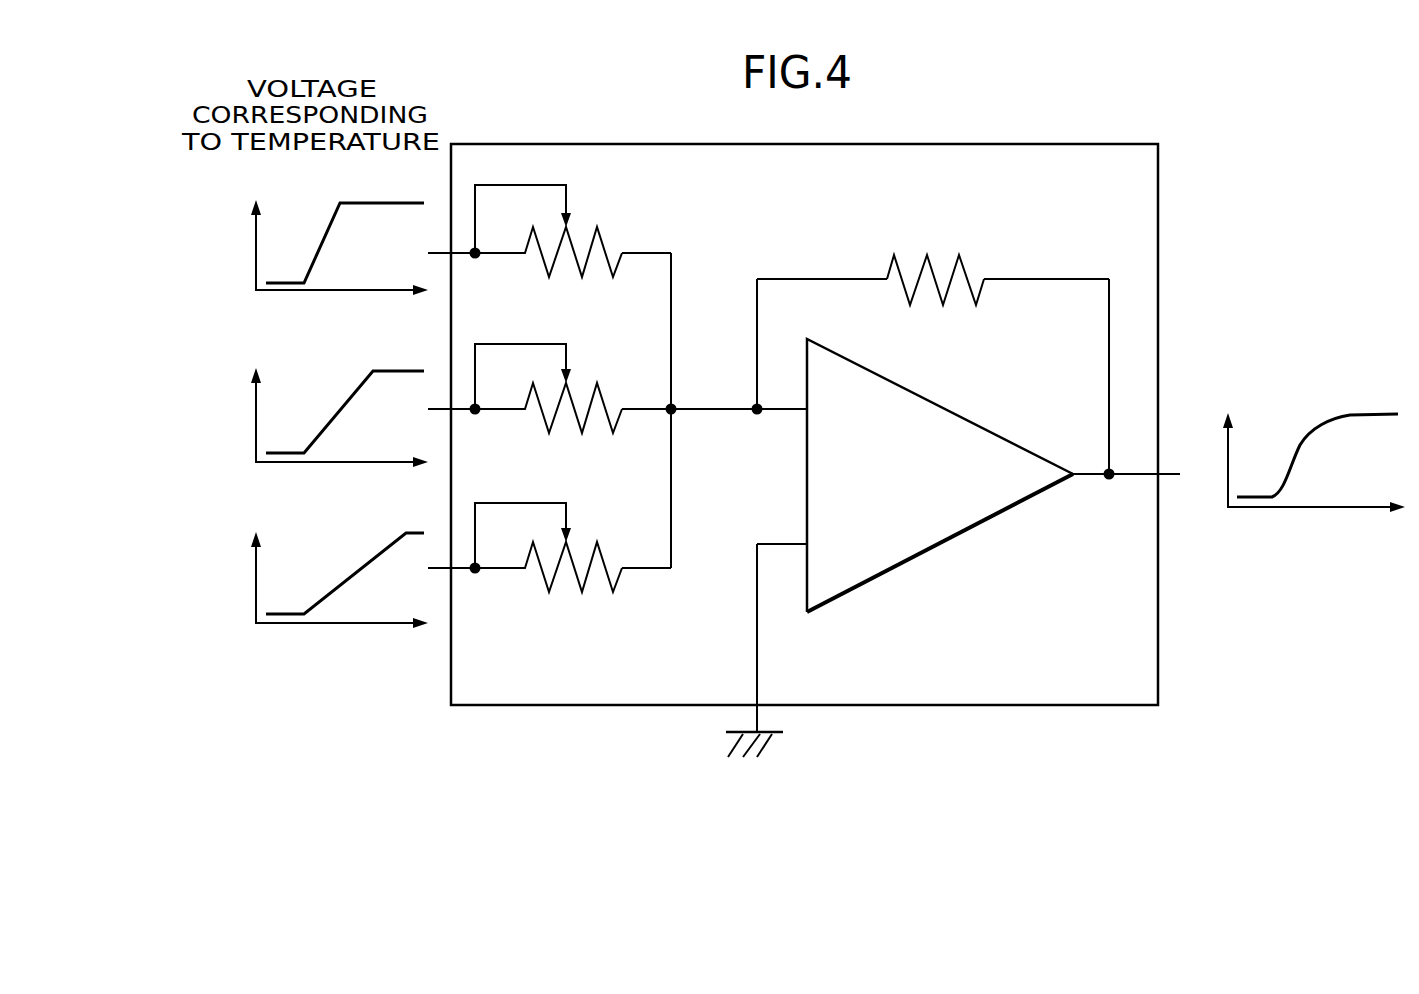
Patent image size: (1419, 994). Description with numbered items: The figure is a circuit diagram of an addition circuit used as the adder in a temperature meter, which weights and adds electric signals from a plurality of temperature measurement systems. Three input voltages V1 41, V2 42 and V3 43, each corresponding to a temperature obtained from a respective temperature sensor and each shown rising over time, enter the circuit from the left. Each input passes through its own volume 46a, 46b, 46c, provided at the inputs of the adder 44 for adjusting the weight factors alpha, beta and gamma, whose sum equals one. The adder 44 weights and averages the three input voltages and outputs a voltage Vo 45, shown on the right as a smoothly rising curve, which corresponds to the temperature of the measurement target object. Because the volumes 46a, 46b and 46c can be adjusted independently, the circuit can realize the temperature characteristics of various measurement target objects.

The input voltage V1 41 is at (269, 248).
The input voltage V2 42 is at (268, 413).
The input voltage V3 43 is at (266, 577).
The adder 44 is at (922, 558).
The output voltage Vo 45 is at (1296, 423).
The volume 46a is at (602, 240).
The volume 46b is at (602, 394).
The volume 46c is at (602, 552).